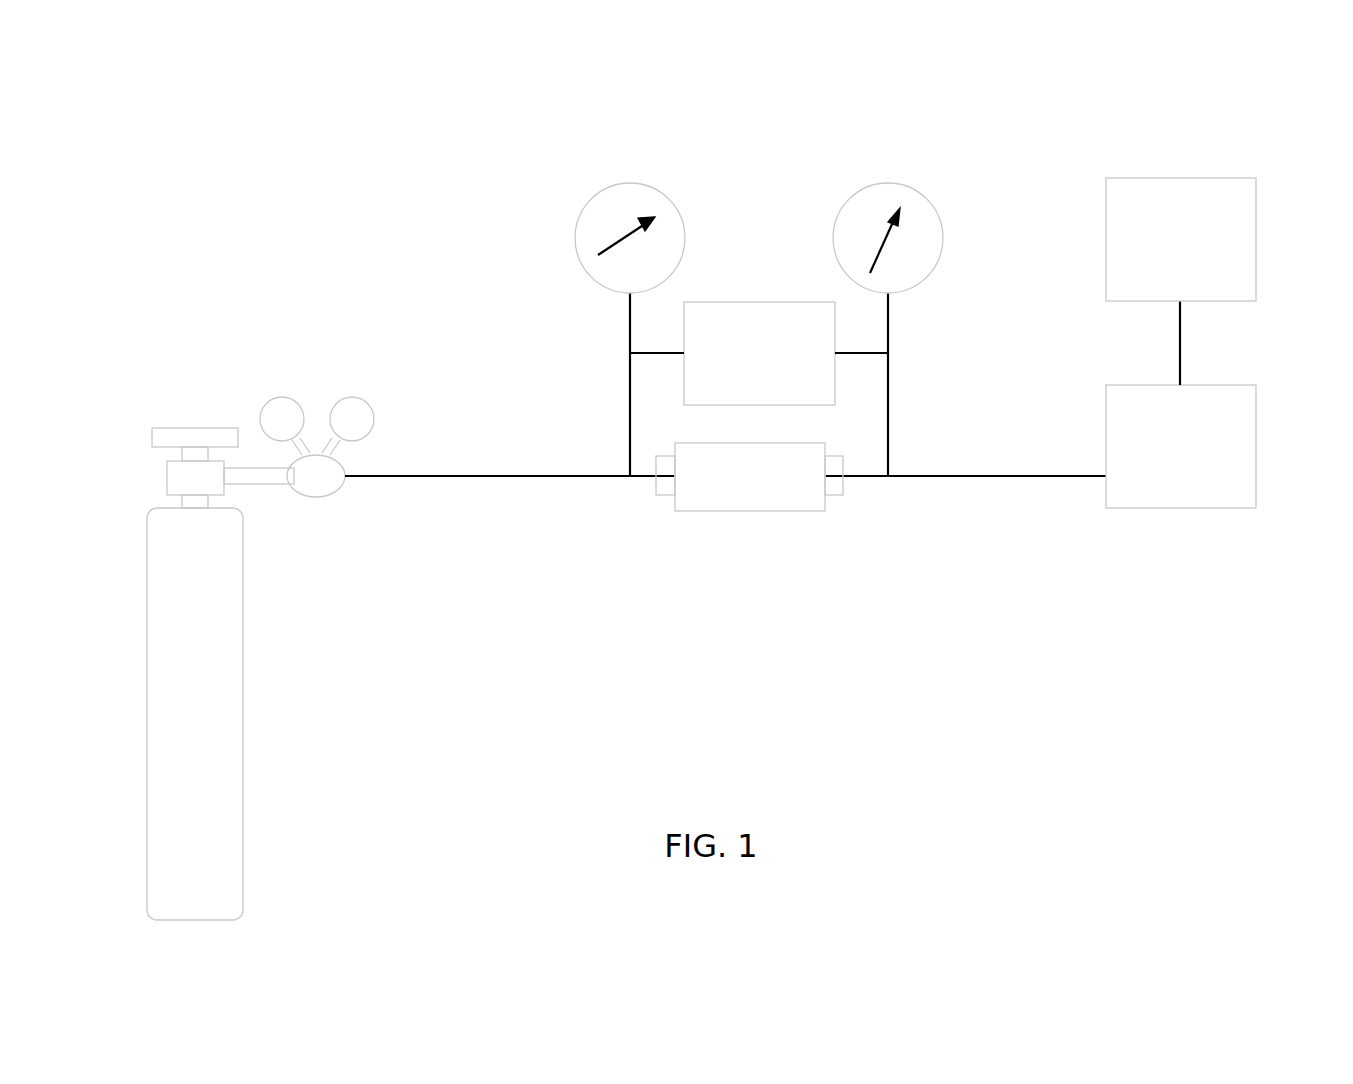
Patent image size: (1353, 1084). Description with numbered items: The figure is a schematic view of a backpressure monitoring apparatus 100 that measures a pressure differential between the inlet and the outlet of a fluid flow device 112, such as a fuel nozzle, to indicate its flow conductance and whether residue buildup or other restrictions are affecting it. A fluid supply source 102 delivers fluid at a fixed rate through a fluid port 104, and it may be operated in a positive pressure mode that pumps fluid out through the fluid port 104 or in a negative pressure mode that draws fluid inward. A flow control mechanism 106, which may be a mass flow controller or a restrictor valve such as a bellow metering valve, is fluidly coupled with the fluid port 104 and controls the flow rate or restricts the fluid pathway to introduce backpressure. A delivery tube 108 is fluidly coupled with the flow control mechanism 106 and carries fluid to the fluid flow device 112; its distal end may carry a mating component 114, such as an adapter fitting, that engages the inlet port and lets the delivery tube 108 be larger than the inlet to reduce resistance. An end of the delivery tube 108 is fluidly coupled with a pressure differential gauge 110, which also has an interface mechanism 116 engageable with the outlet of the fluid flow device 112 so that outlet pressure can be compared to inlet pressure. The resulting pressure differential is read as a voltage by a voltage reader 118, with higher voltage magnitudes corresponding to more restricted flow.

The backpressure monitoring apparatus 100 is at (204, 199).
The fluid supply source 102 is at (245, 714).
The fluid port 104 is at (330, 495).
The flow control mechanism 106 is at (1180, 508).
The delivery tube 108 is at (425, 476).
The pressure differential gauge 110 is at (760, 302).
The fluid flow device 112 is at (760, 511).
The mating component 114 is at (667, 495).
The interface mechanism 116 is at (833, 495).
The voltage reader 118 is at (1171, 180).